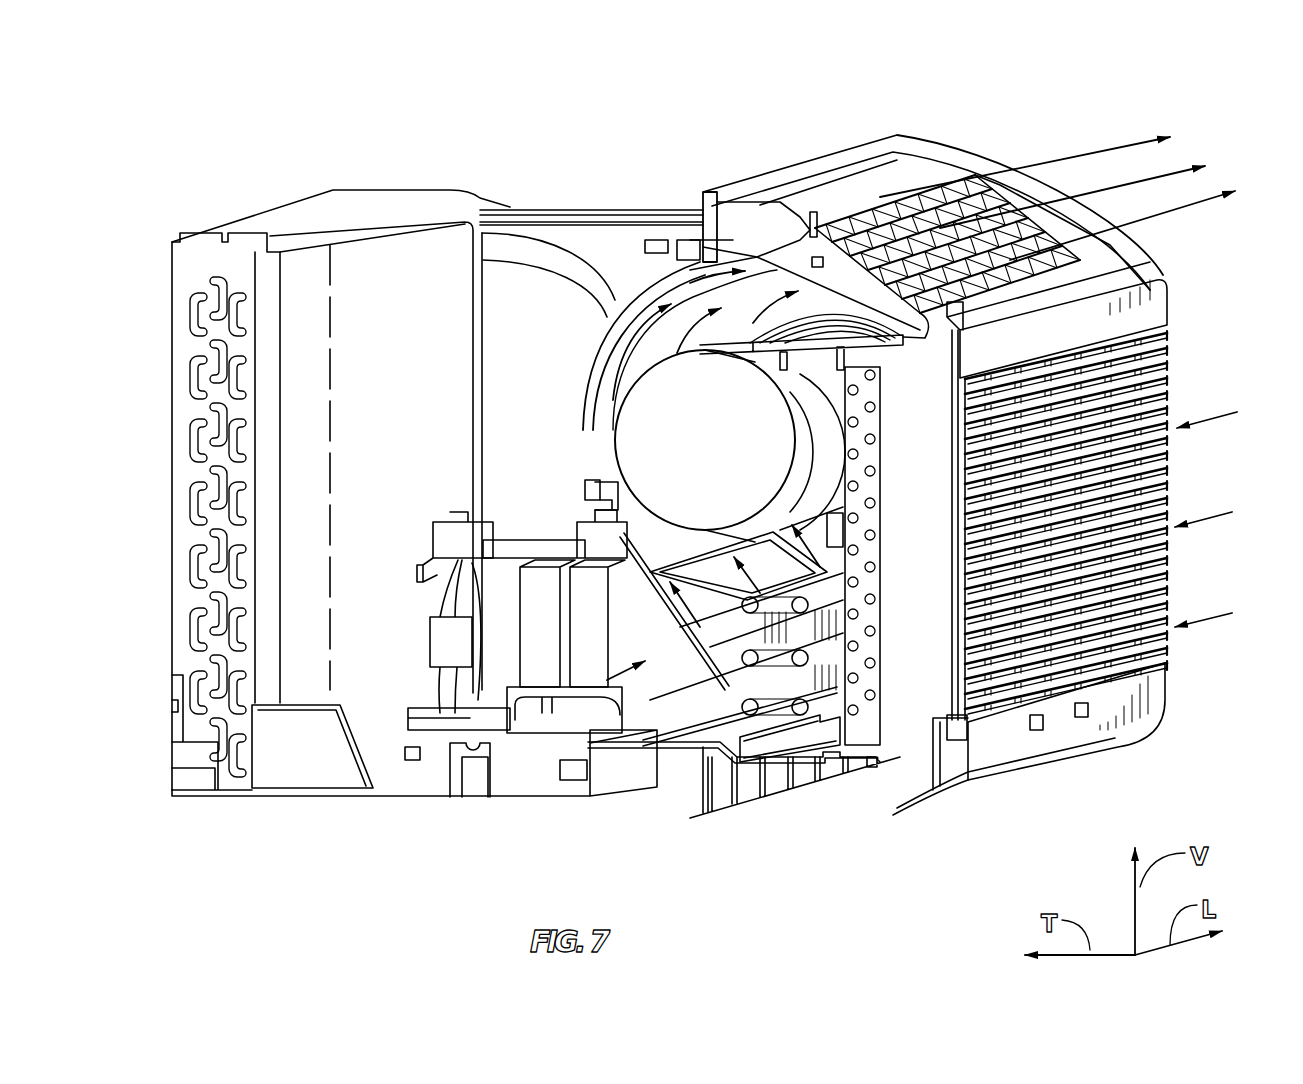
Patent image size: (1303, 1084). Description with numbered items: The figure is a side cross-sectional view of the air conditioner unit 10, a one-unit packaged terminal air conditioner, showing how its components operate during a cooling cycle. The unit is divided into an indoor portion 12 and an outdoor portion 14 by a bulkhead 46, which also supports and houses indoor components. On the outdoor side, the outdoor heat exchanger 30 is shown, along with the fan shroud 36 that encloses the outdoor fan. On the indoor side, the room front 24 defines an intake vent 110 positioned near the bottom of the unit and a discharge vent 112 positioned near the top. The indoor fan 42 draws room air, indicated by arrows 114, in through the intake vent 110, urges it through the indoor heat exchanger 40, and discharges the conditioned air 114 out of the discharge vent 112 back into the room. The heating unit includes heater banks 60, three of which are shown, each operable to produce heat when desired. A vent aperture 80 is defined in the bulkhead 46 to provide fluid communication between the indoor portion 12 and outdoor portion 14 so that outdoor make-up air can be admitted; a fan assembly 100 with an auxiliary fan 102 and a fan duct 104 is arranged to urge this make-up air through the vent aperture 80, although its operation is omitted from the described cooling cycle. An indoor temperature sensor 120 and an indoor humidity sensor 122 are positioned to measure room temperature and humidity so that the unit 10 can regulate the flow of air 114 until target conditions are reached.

The air conditioner unit 10 is at (664, 110).
The indoor portion 12 is at (756, 822).
The outdoor portion 14 is at (283, 822).
The room front 24 is at (1174, 318).
The outdoor heat exchanger 30 is at (191, 264).
The fan shroud 36 is at (360, 262).
The indoor heat exchanger 40 is at (872, 453).
The indoor fan 42 is at (718, 398).
The bulkhead 46 is at (637, 335).
The heater bank 60 is at (740, 609).
The vent aperture 80 is at (600, 690).
The fan assembly 100 is at (416, 684).
The auxiliary fan 102 is at (435, 700).
The fan duct 104 is at (542, 700).
The intake vent 110 is at (1102, 634).
The discharge vent 112 is at (950, 212).
The flow of air 114 is at (655, 288).
The indoor temperature sensor 120 is at (1083, 717).
The indoor humidity sensor 122 is at (813, 252).